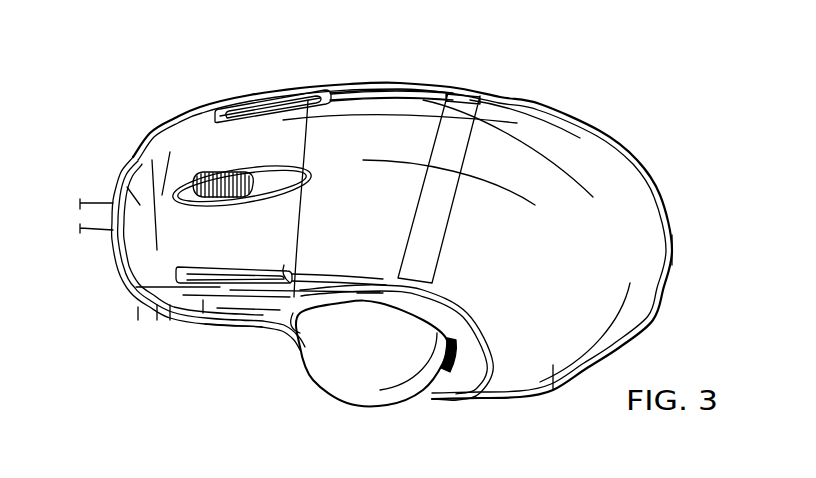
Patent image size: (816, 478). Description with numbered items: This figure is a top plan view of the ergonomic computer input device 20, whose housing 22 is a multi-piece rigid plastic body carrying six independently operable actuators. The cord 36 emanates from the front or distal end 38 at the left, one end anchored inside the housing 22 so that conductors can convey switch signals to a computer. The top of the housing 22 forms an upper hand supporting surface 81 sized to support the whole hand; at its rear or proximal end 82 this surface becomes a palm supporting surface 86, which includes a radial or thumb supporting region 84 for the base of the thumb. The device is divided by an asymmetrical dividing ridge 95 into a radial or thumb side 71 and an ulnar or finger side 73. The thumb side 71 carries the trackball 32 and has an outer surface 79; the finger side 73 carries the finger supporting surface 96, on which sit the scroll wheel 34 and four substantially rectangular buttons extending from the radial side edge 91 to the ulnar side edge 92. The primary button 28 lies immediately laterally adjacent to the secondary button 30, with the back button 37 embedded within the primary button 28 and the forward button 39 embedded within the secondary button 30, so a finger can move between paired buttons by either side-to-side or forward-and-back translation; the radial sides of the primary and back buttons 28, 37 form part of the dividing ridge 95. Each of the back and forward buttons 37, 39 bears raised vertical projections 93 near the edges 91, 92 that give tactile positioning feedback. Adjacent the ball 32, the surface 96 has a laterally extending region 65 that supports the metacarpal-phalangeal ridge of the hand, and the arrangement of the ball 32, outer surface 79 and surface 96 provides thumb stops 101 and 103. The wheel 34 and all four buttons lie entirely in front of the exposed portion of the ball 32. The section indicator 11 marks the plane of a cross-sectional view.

The ergonomic computer input device 20 is at (678, 88).
The housing 22 is at (542, 133).
The primary button 28 is at (157, 250).
The secondary button 30 is at (203, 120).
The trackball 32 is at (349, 388).
The wheel 34 is at (207, 168).
The cord 36 is at (100, 205).
The back button 37 is at (178, 283).
The front or distal end 38 is at (127, 187).
The forward button 39 is at (323, 95).
The laterally extending region 65 is at (437, 217).
The radial or thumb side 71 is at (287, 362).
The ulnar or finger side 73 is at (348, 68).
The outer surface 79 is at (273, 323).
The upper hand supporting surface 81 is at (587, 251).
The rear or proximal end 82 is at (673, 252).
The radial or thumb supporting region 84 is at (550, 365).
The palm supporting surface 86 is at (622, 237).
The radial side edge 91 is at (237, 307).
The ulnar side edge 92 is at (263, 100).
The raised vertical projection 93 is at (287, 103).
The dividing ridge 95 is at (290, 283).
The finger supporting surface 96 is at (368, 143).
The thumb stop 101 is at (358, 292).
The thumb stop 103 is at (460, 353).
The section line 11- 11 is at (445, 40).